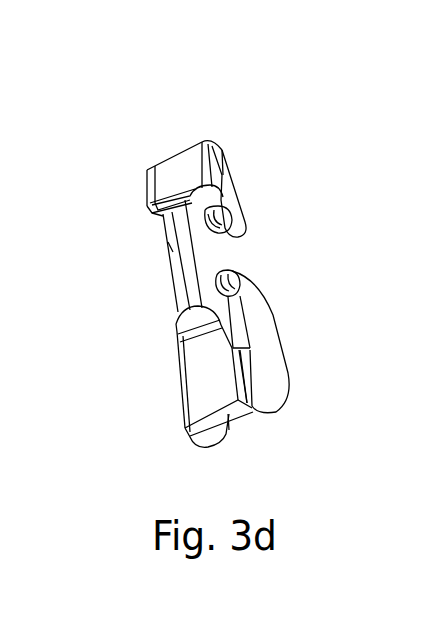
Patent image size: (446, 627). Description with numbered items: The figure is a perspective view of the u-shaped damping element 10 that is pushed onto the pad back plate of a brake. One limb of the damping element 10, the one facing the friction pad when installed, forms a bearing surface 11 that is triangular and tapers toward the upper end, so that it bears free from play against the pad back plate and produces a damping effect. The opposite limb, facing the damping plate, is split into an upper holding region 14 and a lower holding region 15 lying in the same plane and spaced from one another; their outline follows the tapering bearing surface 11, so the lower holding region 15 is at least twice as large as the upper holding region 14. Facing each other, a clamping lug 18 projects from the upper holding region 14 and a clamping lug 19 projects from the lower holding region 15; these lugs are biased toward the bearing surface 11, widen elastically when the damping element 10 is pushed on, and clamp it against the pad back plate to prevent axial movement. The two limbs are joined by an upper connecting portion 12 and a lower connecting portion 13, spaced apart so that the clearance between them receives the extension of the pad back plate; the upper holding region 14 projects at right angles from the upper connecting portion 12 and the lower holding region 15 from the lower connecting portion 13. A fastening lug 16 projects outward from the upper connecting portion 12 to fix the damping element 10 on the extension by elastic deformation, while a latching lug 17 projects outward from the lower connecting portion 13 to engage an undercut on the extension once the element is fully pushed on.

The damping element 10 is at (189, 117).
The bearing surface 11 is at (168, 270).
The upper connecting portion 12 is at (175, 168).
The lower connecting portion 13 is at (208, 373).
The upper holding region 14 is at (225, 175).
The lower holding region 15 is at (262, 352).
The fastening lug 16 is at (160, 212).
The latching lug 17 is at (180, 323).
The clamping lug 18 is at (234, 218).
The clamping lug 19 is at (237, 276).